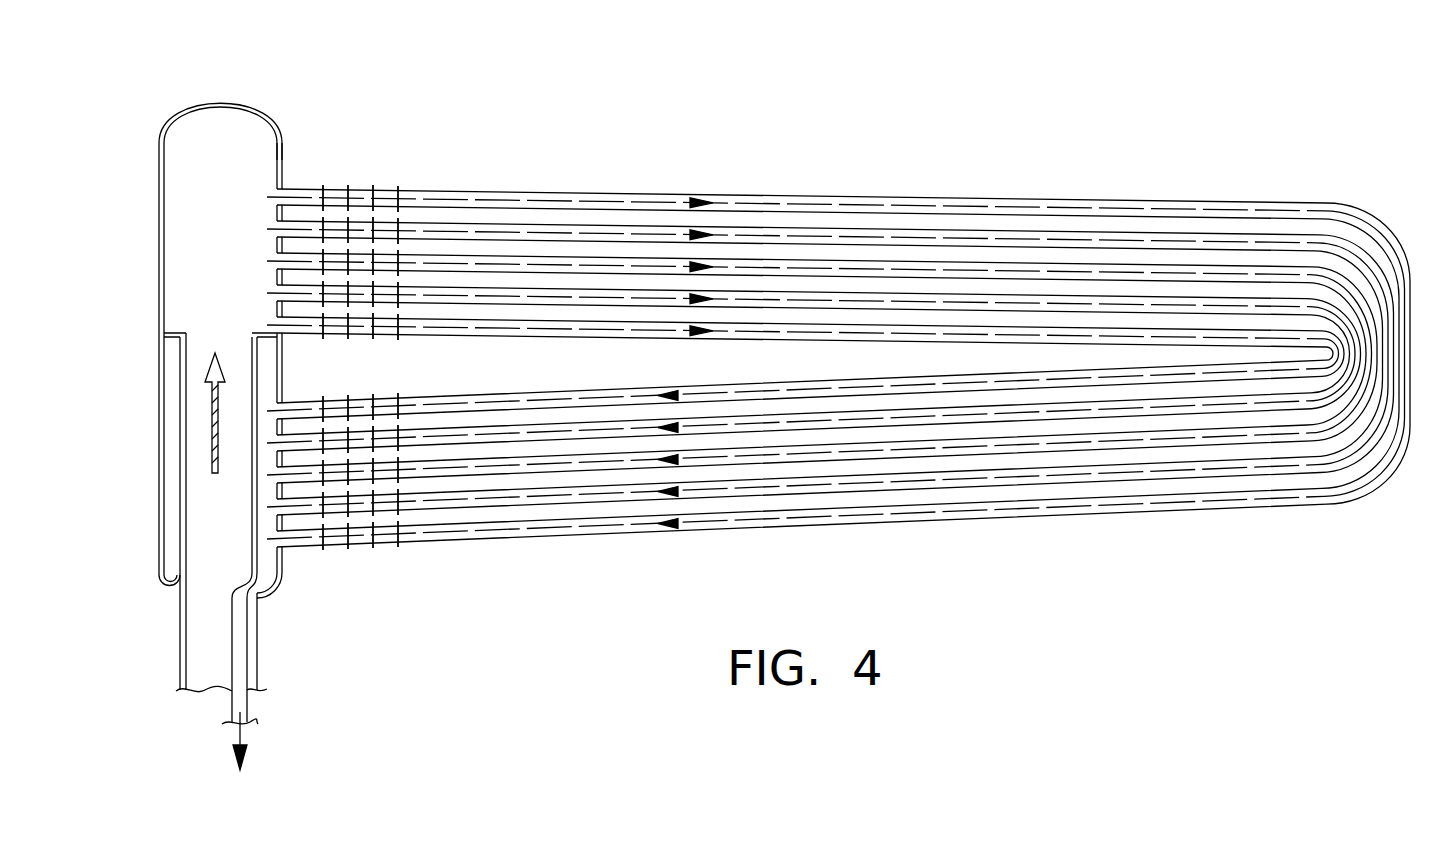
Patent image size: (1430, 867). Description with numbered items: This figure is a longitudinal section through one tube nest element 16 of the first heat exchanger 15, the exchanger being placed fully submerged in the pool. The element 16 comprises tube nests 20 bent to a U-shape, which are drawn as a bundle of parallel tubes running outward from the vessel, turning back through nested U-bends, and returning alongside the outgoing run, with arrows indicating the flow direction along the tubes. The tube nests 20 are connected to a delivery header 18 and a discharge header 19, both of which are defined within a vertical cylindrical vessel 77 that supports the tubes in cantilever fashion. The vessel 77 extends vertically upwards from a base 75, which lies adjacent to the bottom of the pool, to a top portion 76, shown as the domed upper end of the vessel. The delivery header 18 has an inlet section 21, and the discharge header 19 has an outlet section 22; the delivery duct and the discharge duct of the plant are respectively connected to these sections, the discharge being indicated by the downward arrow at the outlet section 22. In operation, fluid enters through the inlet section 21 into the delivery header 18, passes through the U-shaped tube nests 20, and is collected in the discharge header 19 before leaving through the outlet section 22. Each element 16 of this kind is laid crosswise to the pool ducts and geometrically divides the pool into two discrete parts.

The first heat exchanger 15 is at (942, 150).
The tube nest element 16 is at (475, 248).
The delivery header 18 is at (188, 235).
The discharge header 19 is at (279, 568).
The tube nests 20 is at (790, 237).
The inlet section 21 is at (200, 648).
The outlet section 22 is at (243, 660).
The base 75 is at (167, 586).
The top portion 76 is at (225, 132).
The vertical cylindrical vessel 77 is at (281, 143).